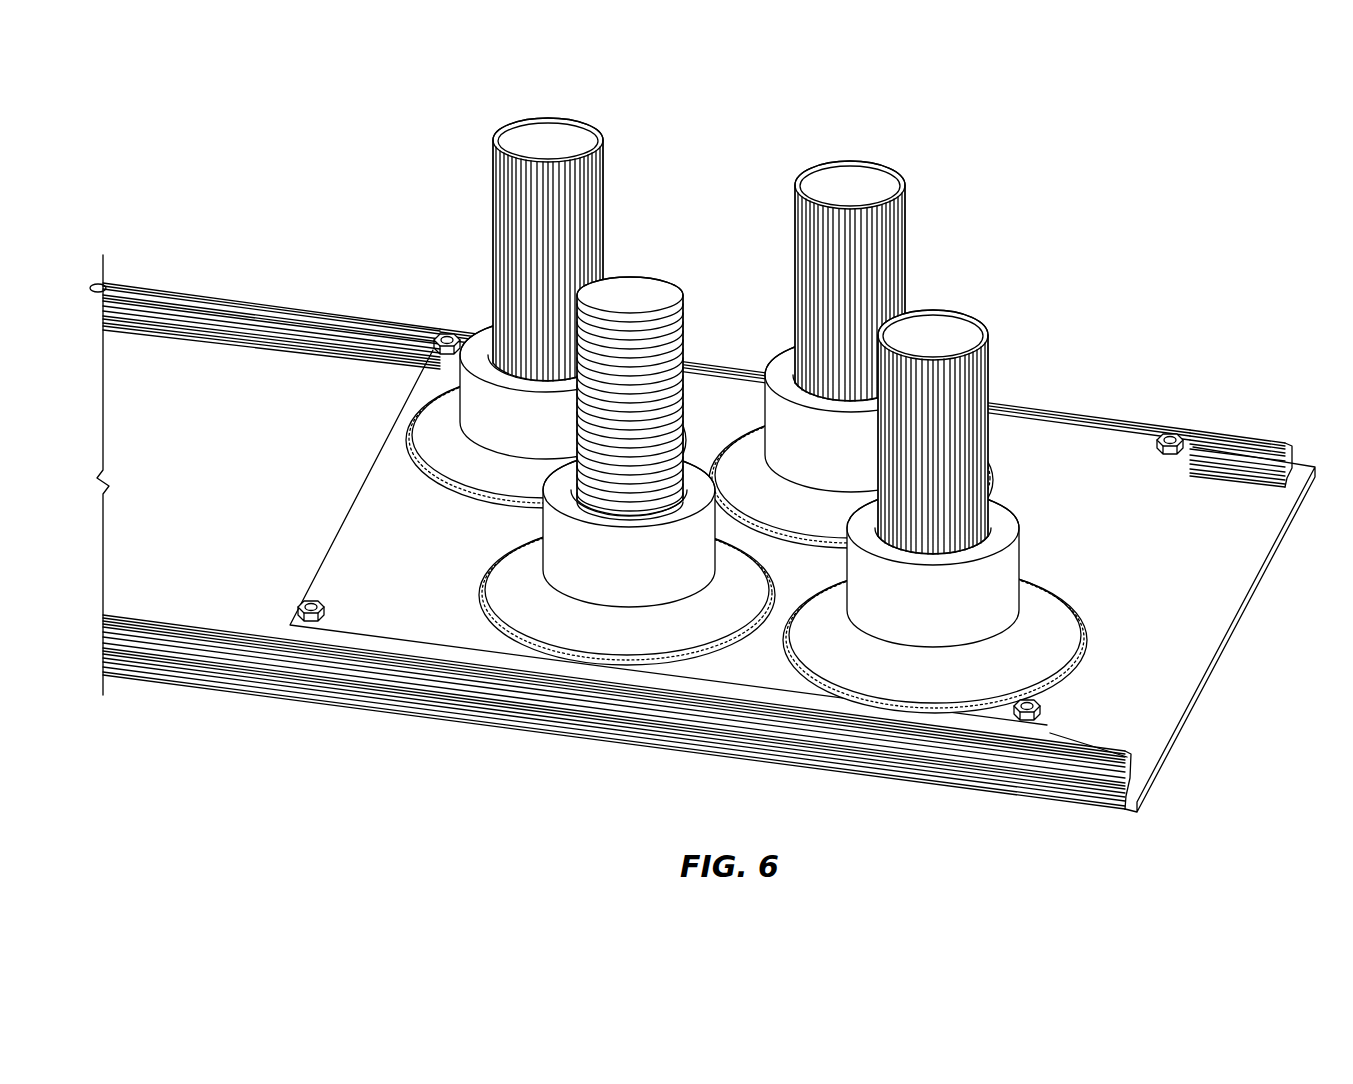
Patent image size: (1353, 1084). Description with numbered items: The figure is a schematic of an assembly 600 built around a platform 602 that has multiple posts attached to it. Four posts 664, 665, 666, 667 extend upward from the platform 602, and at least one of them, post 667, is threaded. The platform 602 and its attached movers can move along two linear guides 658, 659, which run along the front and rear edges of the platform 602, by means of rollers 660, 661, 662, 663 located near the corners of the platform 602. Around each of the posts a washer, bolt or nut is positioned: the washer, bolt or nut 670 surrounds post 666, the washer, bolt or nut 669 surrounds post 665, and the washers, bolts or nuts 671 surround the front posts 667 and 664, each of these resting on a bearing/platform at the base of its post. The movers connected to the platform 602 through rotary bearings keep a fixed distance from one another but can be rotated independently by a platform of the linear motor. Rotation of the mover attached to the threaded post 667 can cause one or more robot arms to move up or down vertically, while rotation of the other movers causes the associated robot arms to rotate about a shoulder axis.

The terminal assembly 600 is at (704, 473).
The platform 602 is at (1076, 428).
The linear guide 658 is at (746, 735).
The linear guide 659 is at (1268, 443).
The roller 660 is at (1022, 722).
The roller 661 is at (1170, 433).
The roller 662 is at (447, 333).
The roller 663 is at (290, 628).
The post 664 is at (988, 387).
The post 665 is at (795, 240).
The post 666 is at (493, 210).
The threaded post 667 is at (683, 292).
The washer, bolt or nut 669 is at (783, 347).
The washer, bolt or nut 670 is at (478, 328).
The washer, bolt or nut 671 is at (590, 568).